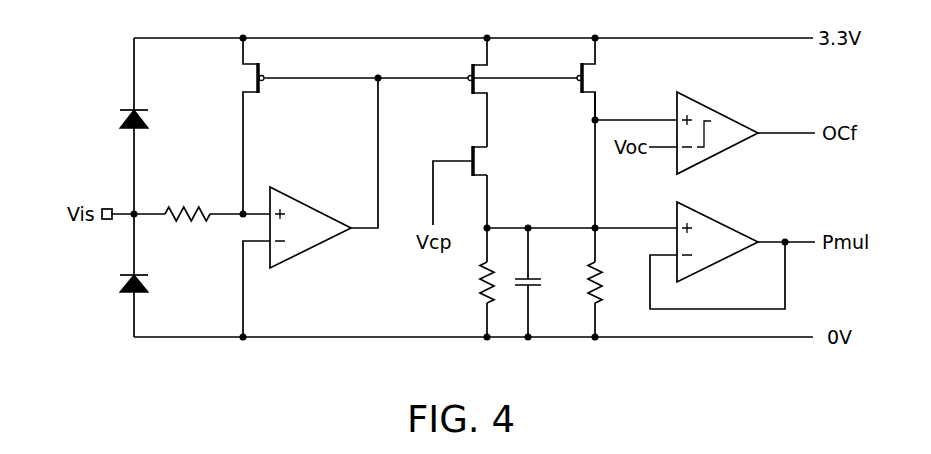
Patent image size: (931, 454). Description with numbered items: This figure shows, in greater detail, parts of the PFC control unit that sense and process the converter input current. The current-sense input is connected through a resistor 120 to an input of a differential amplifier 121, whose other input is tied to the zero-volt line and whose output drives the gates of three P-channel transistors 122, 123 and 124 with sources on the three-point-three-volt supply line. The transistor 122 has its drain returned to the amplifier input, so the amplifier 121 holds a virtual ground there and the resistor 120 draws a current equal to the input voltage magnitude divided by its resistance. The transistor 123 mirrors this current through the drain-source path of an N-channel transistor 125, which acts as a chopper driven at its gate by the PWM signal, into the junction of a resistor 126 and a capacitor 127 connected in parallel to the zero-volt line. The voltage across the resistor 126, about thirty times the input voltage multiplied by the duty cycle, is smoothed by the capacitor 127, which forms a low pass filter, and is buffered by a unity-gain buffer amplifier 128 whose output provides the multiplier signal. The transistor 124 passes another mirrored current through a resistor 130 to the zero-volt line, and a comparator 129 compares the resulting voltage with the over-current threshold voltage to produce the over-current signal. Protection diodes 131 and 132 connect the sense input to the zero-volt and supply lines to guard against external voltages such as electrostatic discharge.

The resistor 120 is at (190, 205).
The differential amplifier 121 is at (308, 210).
The P-channel transistor 122 is at (241, 78).
The P-channel transistor 123 is at (490, 88).
The P-channel transistor 124 is at (600, 78).
The N-channel transistor 125 is at (490, 160).
The resistor 126 is at (478, 292).
The capacitor 127 is at (540, 279).
The unity-gain buffer amplifier 128 is at (722, 233).
The comparator 129 is at (722, 125).
The resistor 130 is at (589, 282).
The protection diode 131 is at (146, 276).
The protection diode 132 is at (150, 118).